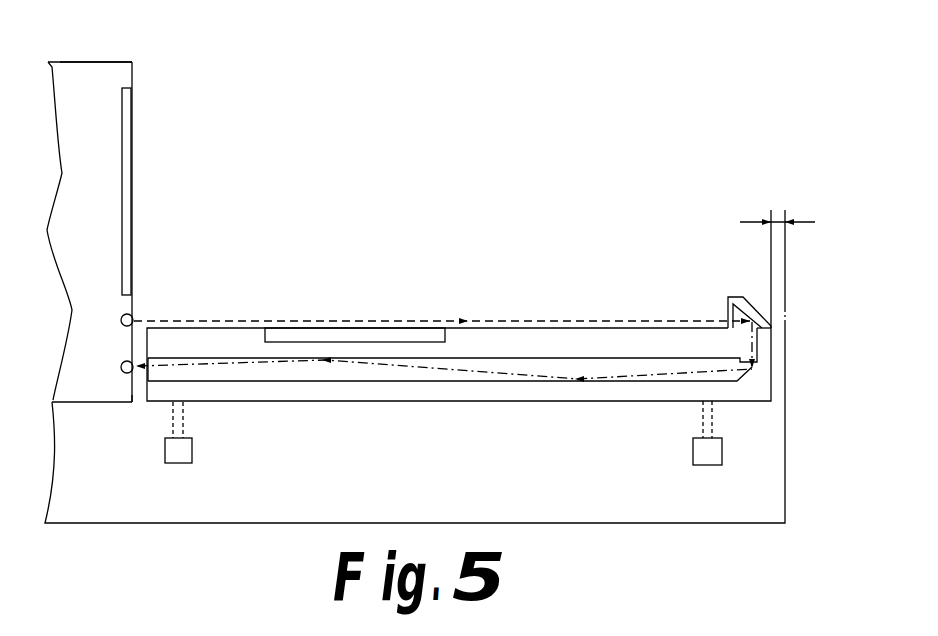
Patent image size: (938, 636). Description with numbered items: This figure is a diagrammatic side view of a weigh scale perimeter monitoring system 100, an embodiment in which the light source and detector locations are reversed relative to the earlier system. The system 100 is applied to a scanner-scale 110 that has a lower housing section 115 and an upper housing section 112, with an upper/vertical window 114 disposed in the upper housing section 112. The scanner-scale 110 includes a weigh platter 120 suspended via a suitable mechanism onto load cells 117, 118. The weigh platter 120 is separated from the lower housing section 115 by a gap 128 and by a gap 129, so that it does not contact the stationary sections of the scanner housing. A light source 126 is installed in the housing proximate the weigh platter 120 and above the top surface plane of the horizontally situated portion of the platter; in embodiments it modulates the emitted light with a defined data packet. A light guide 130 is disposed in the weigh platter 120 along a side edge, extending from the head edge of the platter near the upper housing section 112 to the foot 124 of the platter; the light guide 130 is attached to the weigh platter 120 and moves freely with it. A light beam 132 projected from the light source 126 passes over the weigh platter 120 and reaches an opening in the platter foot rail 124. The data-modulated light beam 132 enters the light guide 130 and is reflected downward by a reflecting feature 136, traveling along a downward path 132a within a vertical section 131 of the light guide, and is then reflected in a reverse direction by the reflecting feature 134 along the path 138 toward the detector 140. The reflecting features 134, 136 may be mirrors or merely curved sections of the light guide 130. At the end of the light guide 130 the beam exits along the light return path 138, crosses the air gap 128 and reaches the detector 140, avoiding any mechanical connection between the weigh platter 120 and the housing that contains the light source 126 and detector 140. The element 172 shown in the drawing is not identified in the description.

The weigh scale perimeter monitoring system 100 is at (379, 110).
The scanner-scale 110 is at (137, 68).
The upper housing section 112 is at (117, 62).
The upper/vertical window 114 is at (133, 215).
The lower housing section 115 is at (545, 505).
The load cell 117 is at (182, 455).
The load cell 118 is at (702, 455).
The weigh platter 120 is at (462, 408).
The platter foot rail 124 is at (750, 297).
The light source 126 is at (133, 318).
The gap 128 is at (137, 394).
The gap 129 is at (777, 217).
The light guide 130 is at (222, 402).
The vertical section 131 is at (742, 343).
The light beam 132 is at (430, 322).
The downward path 132a is at (784, 362).
The reflecting feature 134 is at (752, 368).
The reflecting feature 136 is at (728, 297).
The light return path 138 is at (410, 372).
The detector 140 is at (120, 395).
The heating element 172 is at (305, 328).